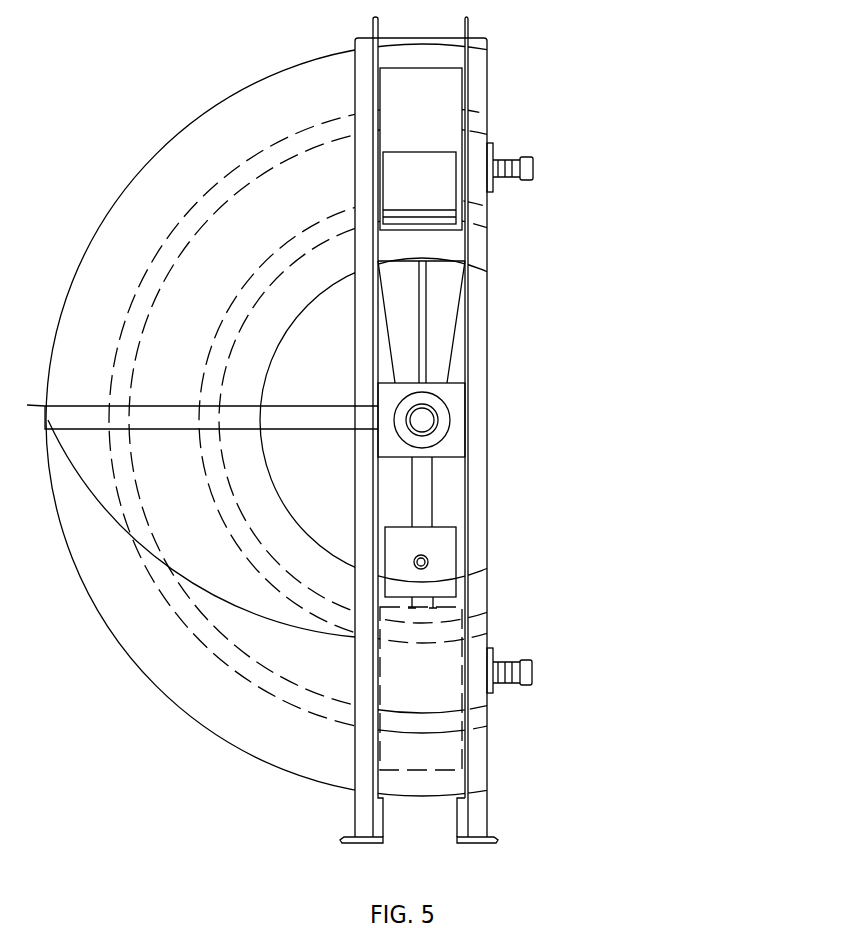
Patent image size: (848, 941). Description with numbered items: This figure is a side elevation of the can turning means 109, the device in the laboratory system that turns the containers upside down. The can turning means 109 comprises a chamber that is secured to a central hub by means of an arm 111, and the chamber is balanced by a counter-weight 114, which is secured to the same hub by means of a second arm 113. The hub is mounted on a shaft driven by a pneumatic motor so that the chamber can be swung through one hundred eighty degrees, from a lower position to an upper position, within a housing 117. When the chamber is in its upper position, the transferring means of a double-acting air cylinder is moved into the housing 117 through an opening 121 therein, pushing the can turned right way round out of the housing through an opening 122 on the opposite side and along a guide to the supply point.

The can turning means 109 is at (263, 70).
The housing 117 is at (161, 672).
The opening 122 is at (458, 92).
The opening 121 is at (448, 162).
The arm 111 is at (425, 348).
The arm 113 is at (425, 502).
The counter-weight 114 is at (447, 567).